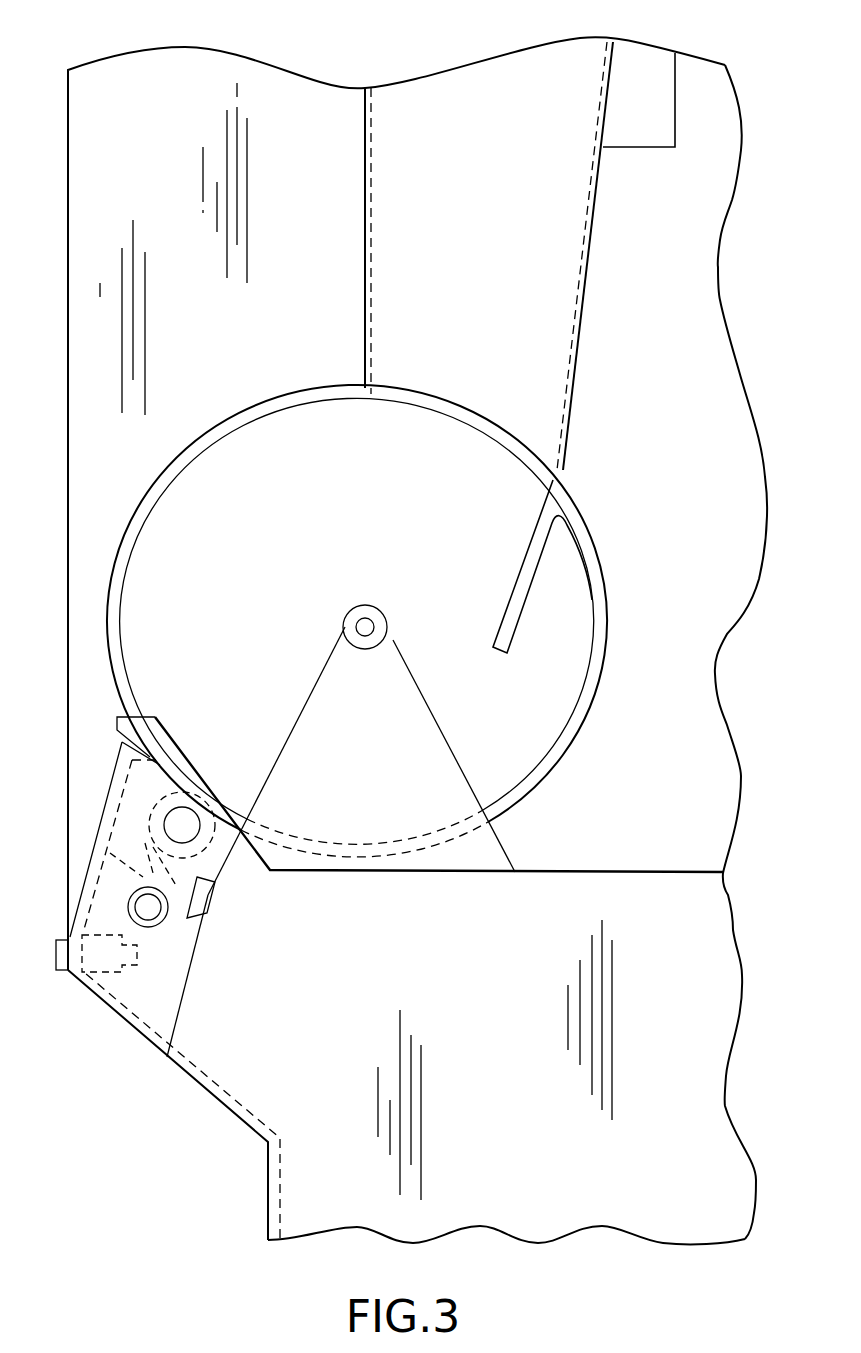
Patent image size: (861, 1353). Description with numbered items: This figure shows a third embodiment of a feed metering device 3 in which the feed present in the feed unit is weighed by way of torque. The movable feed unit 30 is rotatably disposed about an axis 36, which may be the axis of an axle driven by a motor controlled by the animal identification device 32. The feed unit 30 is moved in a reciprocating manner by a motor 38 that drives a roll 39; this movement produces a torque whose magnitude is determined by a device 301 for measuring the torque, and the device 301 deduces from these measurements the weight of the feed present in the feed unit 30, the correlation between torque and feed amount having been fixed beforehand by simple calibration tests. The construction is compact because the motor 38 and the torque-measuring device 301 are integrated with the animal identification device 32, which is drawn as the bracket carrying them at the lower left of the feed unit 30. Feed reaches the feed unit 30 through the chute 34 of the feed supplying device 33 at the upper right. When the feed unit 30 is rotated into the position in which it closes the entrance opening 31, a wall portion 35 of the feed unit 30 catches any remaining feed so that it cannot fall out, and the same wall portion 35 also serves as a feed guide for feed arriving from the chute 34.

The feeding mechanism 3 is at (618, 612).
The feed unit 30 is at (580, 722).
The entrance opening 31 is at (318, 393).
The animal identification device 32 is at (140, 995).
The feed supplying device 33 is at (638, 135).
The chute 34 is at (570, 273).
The wall portion 35 is at (535, 551).
The axis 36 is at (363, 627).
The motor 38 is at (163, 927).
The roll 39 is at (207, 835).
The device for measuring the magnitude of the torque 301 is at (200, 912).